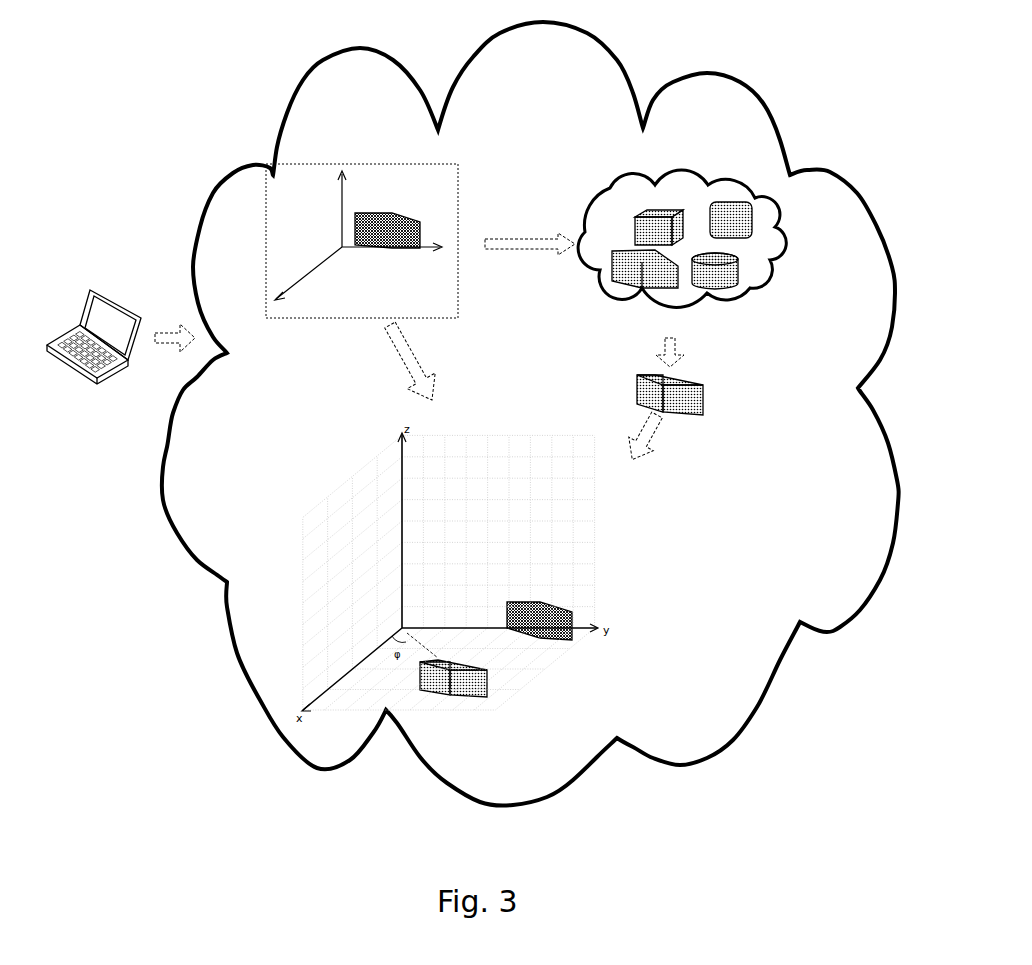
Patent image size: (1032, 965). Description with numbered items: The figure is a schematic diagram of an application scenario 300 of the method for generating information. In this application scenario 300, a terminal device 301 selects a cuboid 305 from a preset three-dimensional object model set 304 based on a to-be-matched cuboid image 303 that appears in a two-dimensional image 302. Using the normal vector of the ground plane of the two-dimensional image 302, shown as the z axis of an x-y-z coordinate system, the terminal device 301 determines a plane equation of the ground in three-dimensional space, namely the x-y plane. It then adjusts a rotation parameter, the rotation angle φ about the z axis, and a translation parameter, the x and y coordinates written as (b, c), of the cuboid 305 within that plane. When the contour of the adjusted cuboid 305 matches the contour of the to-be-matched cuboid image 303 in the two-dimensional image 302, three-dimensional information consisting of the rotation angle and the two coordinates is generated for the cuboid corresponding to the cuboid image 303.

The application scenario 300 is at (824, 44).
The terminal device 301 is at (115, 306).
The two-dimensional image 302 is at (428, 166).
The to-be-matched cuboid image 303 is at (424, 230).
The preset three-dimensional object model set 304 is at (707, 176).
The cuboid 305 is at (705, 398).